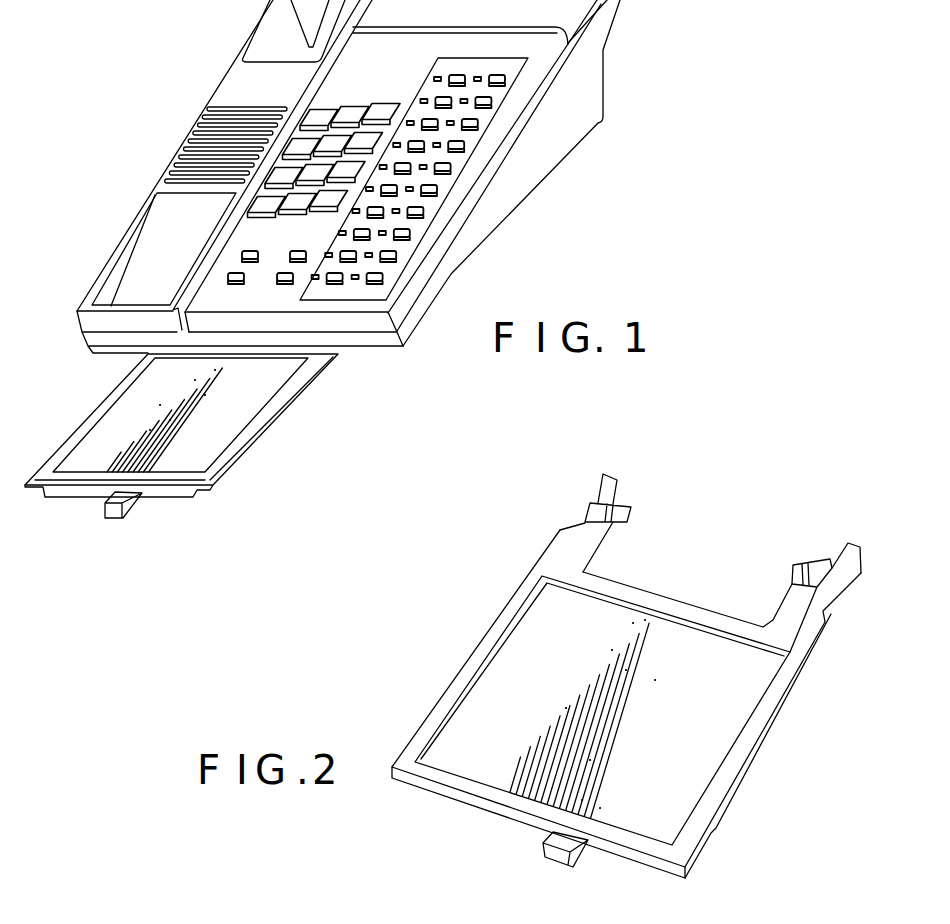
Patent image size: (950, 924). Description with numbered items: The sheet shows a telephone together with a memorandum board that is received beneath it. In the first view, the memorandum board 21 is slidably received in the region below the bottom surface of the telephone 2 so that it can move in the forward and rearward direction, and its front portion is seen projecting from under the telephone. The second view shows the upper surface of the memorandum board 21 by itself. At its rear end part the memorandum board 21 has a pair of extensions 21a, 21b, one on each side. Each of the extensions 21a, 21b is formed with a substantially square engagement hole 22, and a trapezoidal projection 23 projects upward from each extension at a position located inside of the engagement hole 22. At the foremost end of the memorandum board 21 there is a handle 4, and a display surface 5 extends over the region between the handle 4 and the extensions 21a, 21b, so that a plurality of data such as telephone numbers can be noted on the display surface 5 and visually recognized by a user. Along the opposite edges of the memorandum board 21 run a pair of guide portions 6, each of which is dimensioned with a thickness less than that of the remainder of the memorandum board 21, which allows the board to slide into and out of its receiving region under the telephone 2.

In FIG. 1, the telephone 2 is at (549, 147).
In FIG. 1, the memorandum board 21 is at (262, 436).
In FIG. 2, the handle 4 is at (577, 858).
In FIG. 2, the display surface 5 is at (490, 682).
In FIG. 2, the guide portions 6 is at (742, 776).
In FIG. 2, the extension 21a is at (783, 610).
In FIG. 2, the extension 21b is at (562, 548).
In FIG. 2, the engagement hole 22 is at (594, 512).
In FIG. 2, the trapezoidal projection 23 is at (626, 528).